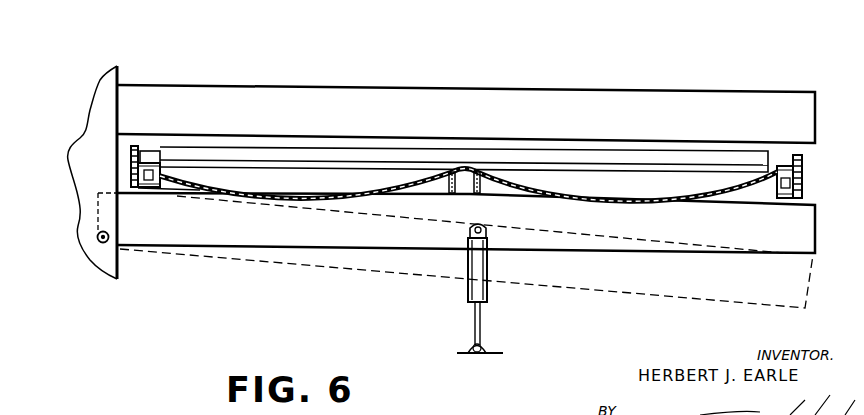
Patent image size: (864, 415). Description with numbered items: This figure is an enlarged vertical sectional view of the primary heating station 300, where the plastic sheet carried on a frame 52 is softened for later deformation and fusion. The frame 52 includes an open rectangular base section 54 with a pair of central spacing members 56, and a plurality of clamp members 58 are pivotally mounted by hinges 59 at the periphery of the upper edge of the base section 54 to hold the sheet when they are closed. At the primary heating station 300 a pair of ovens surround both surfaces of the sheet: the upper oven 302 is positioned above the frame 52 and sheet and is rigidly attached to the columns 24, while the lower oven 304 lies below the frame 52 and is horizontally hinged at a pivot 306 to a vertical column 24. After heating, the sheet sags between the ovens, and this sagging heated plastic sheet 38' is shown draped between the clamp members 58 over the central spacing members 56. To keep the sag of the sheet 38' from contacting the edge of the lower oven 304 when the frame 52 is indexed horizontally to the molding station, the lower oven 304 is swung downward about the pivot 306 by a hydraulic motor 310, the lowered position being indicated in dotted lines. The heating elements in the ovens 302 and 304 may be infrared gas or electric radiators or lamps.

The column 24 is at (93, 95).
The upper oven 302 is at (381, 126).
The lower oven 304 is at (284, 240).
The frame 52 is at (185, 195).
The clamp member 58 is at (160, 153).
The hinge 59 is at (130, 177).
The sagging heated plastic sheet 38' is at (468, 186).
The central spacing member 56 is at (458, 186).
The base section 54 is at (488, 183).
The pivot 306 is at (97, 238).
The primary heating station 300 is at (795, 333).
The hydraulic motor 310 is at (468, 292).